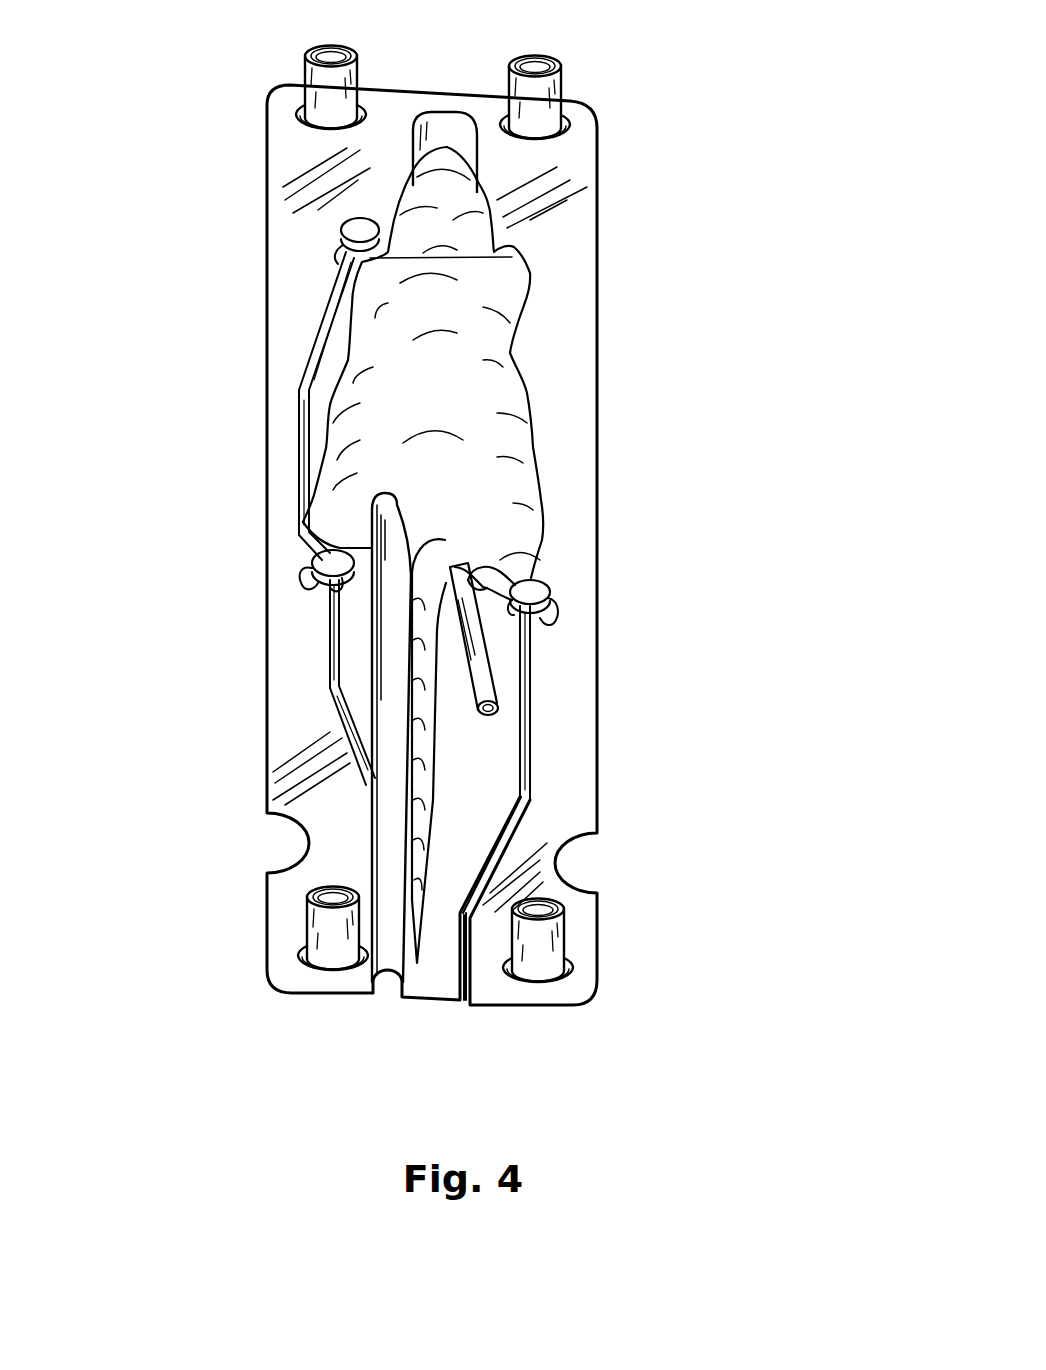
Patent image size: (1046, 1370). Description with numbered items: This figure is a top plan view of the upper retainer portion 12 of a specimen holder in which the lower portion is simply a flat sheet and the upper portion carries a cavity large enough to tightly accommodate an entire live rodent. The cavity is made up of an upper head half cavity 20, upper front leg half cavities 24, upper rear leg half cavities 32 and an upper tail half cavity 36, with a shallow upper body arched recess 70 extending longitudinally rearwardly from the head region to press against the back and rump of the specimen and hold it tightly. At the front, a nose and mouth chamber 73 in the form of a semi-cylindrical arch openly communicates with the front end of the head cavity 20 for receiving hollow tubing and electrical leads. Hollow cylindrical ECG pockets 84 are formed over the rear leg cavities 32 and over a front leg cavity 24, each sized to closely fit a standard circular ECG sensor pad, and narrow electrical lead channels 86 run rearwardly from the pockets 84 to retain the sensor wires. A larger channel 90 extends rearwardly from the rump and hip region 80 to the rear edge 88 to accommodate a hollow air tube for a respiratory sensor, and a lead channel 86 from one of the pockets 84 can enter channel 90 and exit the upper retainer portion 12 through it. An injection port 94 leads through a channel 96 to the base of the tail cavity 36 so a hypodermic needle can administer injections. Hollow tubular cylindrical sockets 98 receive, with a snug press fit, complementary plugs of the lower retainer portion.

The upper retainer portion 12 is at (690, 361).
The upper head half cavity 20 is at (522, 555).
The upper front leg half cavity 24 is at (512, 257).
The upper rear leg half cavity 32 is at (312, 578).
The upper tail half cavity 36 is at (430, 752).
The upper body arched recess 70 is at (519, 555).
The nose and mouth chamber 73 is at (460, 137).
The rump and hip region 80 is at (457, 470).
The ECG pocket 84 is at (343, 226).
The electrical lead channel 86 is at (310, 353).
The rear edge 88 is at (525, 1005).
The channel 90 is at (385, 830).
The injection port 94 is at (497, 716).
The channel 96 is at (596, 683).
The tubular cylindrical socket 98 is at (307, 92).